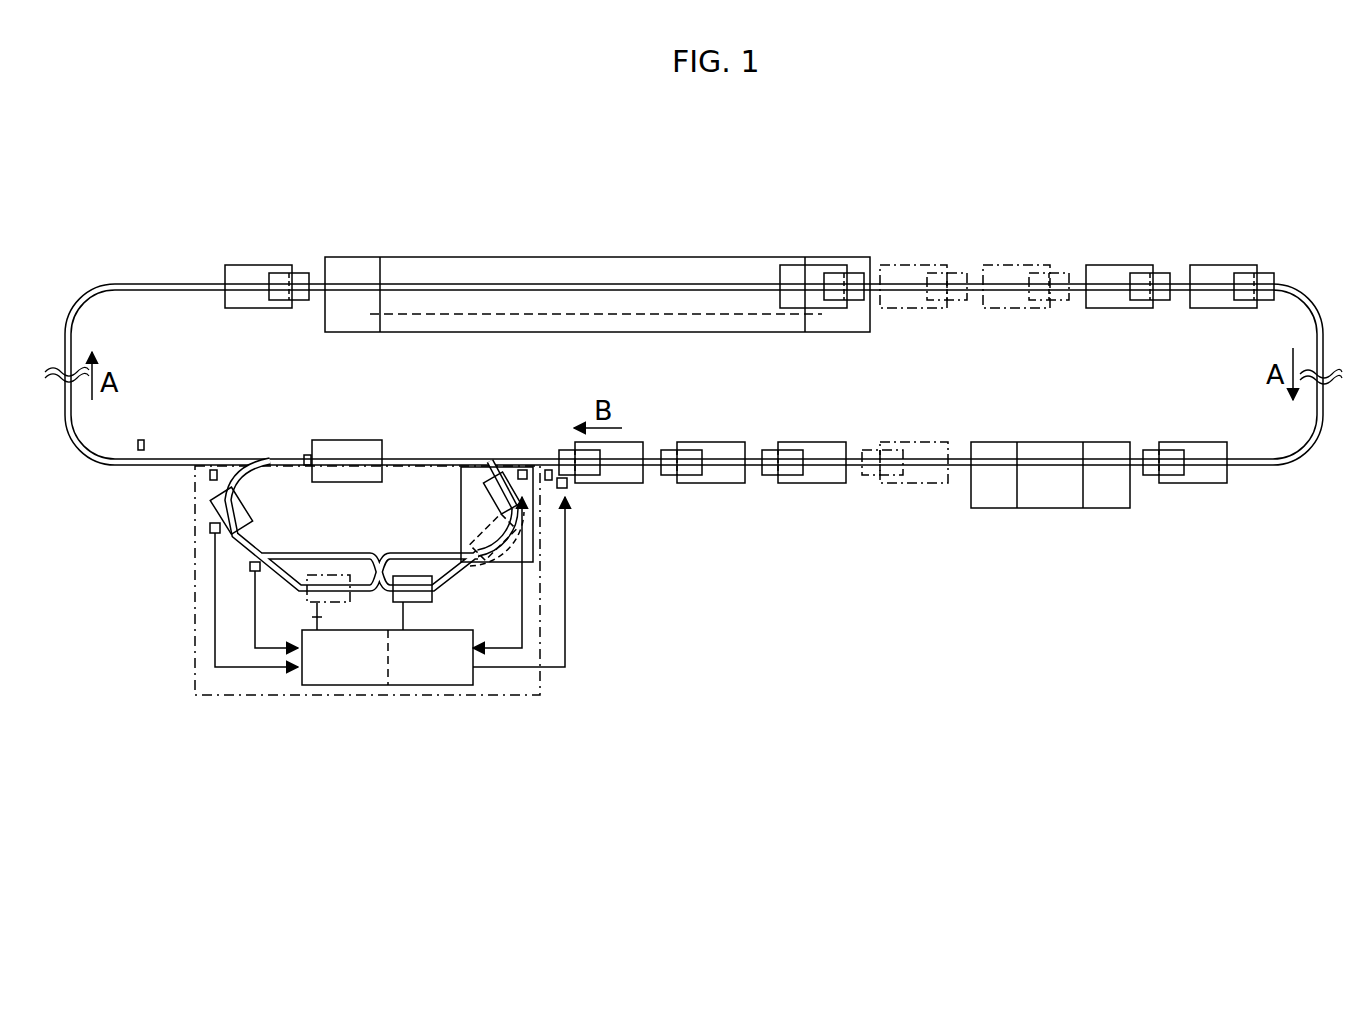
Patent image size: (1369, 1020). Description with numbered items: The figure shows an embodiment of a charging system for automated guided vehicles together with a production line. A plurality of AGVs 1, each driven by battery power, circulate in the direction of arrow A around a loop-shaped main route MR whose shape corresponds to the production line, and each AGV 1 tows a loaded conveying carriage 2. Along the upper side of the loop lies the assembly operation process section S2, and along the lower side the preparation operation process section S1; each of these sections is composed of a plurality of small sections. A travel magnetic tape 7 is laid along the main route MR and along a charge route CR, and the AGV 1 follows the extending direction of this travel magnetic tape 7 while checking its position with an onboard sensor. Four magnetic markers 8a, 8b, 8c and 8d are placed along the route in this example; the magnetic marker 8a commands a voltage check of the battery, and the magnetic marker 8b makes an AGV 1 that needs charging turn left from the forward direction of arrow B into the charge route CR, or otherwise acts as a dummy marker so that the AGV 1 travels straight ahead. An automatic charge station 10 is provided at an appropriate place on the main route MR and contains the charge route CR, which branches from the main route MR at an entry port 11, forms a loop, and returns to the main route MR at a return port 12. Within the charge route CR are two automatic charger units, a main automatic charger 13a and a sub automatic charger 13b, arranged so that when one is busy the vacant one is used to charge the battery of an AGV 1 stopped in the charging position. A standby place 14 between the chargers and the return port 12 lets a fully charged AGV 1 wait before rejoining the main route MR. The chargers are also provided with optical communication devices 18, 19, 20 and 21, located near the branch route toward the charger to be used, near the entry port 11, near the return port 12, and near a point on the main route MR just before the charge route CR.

The AGV 1 is at (300, 273).
The conveying carriage 2 is at (250, 265).
The travel magnetic tape 7 is at (183, 284).
The magnetic marker 8a is at (549, 470).
The magnetic marker 8b is at (306, 455).
The magnetic marker 8c is at (208, 476).
The magnetic marker 8d is at (142, 440).
The automatic charge station 10 is at (205, 584).
The entry port 11 is at (258, 478).
The return port 12 is at (497, 470).
The main automatic charger 13a is at (344, 686).
The sub automatic charger 13b is at (432, 686).
The standby place 14 is at (470, 530).
The optical communication device 18 is at (254, 571).
The optical communication device 19 is at (208, 528).
The optical communication device 20 is at (522, 470).
The optical communication device 21 is at (566, 492).
The main route MR is at (115, 255).
The charge route CR is at (243, 555).
The preparation operation process section S1 is at (1047, 508).
The assembly operation process section S2 is at (608, 257).